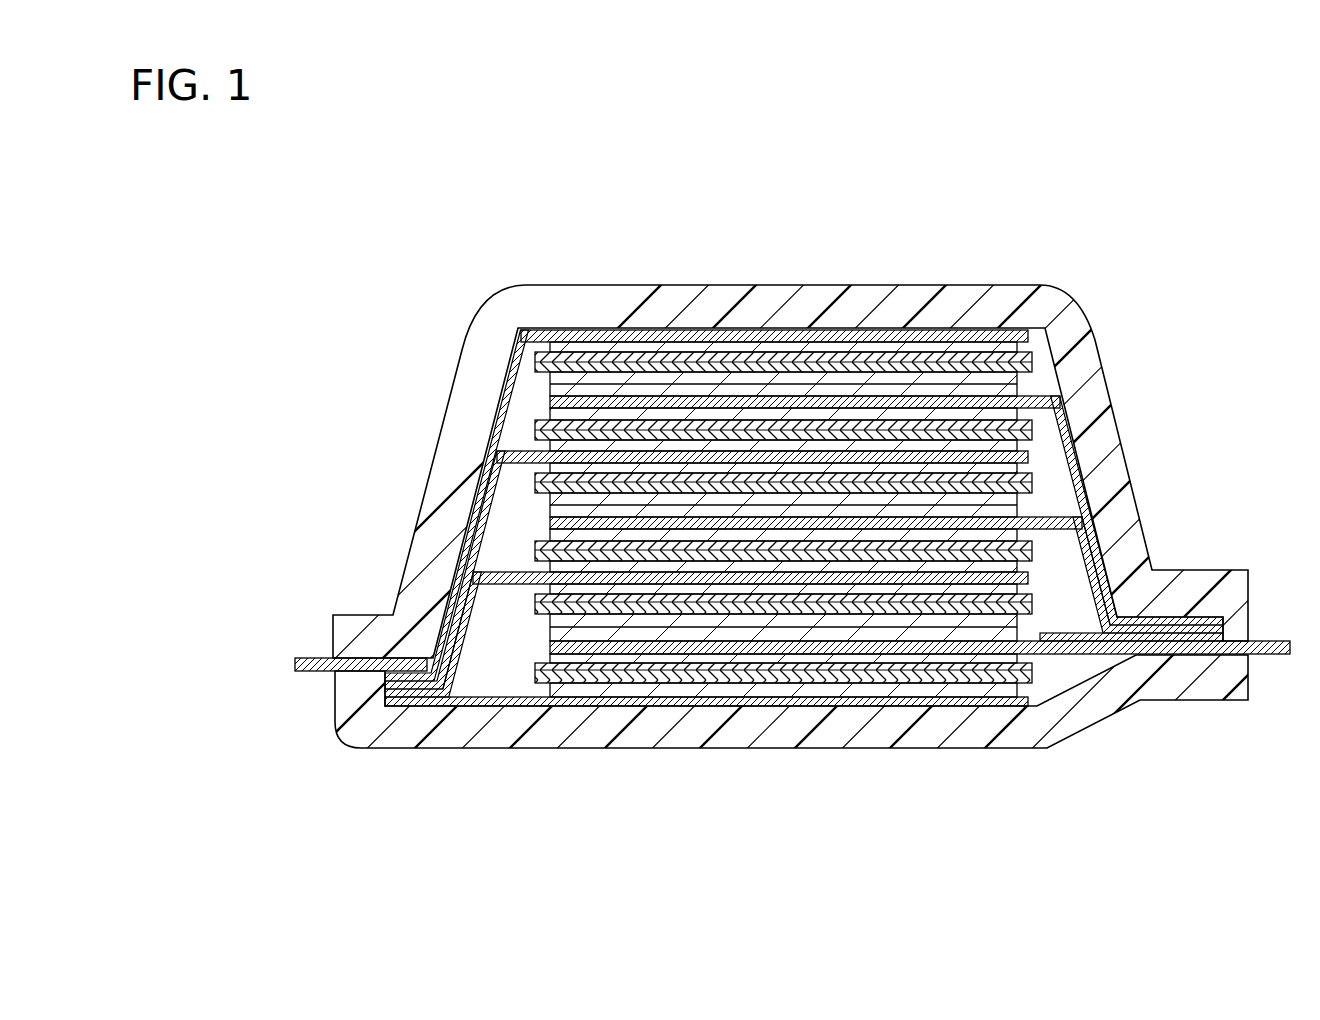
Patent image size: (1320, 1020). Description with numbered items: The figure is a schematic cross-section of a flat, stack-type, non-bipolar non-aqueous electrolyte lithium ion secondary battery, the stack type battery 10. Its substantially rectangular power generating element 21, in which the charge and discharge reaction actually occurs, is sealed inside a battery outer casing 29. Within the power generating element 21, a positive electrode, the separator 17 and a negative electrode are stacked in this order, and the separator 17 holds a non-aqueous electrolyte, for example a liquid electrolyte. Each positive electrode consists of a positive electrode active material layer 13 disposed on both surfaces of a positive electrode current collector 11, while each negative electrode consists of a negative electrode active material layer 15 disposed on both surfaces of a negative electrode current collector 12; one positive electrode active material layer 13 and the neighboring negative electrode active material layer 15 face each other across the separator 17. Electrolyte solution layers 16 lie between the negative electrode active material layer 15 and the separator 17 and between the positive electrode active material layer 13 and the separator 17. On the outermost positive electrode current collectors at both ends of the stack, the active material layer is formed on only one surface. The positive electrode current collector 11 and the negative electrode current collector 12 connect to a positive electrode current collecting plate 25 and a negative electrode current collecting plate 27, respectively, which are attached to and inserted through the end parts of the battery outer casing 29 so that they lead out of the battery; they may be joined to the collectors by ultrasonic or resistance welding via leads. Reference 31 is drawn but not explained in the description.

The stack type battery 10 is at (348, 144).
The positive electrode current collector 11 is at (879, 332).
The negative electrode current collector 12 is at (698, 390).
The positive electrode active material layer 13 is at (843, 375).
The negative electrode active material layer 15 is at (748, 356).
The electrolyte solution layer 16 is at (985, 362).
The separator 17 is at (788, 362).
The power generating element 21 is at (1045, 565).
The positive electrode current collecting plate (tab) 25 is at (316, 658).
The negative electrode current collecting plate (tab) 27 is at (1274, 640).
The battery outer casing 29 is at (1234, 570).
The insulating layer 31 is at (1050, 485).